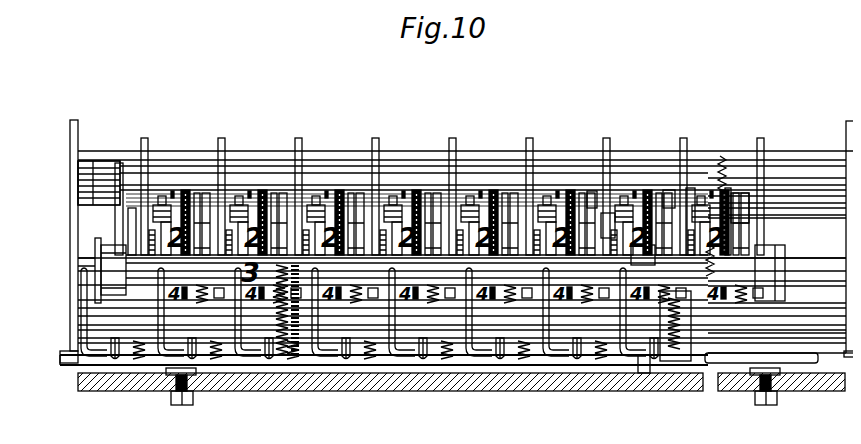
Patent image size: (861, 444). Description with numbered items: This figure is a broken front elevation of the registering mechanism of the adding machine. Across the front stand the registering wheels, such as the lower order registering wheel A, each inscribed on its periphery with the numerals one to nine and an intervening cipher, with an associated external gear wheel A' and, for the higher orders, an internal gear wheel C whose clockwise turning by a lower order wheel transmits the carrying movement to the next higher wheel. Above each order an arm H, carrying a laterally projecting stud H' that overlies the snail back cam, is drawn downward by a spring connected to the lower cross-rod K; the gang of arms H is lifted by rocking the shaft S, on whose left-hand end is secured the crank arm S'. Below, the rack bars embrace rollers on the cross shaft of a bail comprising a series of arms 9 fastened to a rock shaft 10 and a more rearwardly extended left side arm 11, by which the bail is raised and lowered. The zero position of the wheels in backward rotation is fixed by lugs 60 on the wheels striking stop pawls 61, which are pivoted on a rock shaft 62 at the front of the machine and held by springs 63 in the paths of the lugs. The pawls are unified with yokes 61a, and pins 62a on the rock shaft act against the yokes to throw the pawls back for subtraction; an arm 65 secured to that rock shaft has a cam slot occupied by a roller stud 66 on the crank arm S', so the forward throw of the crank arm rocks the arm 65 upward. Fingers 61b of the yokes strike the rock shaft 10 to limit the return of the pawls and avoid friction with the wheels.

The crank arm S' is at (147, 170).
The roller stud 66 is at (113, 185).
The lugs 60 is at (310, 200).
The stop pawls 61 is at (325, 205).
The arm H is at (584, 153).
The laterally projecting stud H' is at (624, 177).
The internal gear wheel C is at (657, 182).
The lower order registering wheel A is at (708, 180).
The external gear wheel A' is at (739, 181).
The shaft S is at (825, 223).
The left side arm 11 is at (88, 253).
The rock shaft 10 is at (798, 253).
The arms 9 is at (347, 257).
The fingers 61b is at (236, 268).
The rock shaft 62 is at (595, 320).
The yokes 61a is at (132, 350).
The pins 62a is at (187, 350).
The springs 63 is at (362, 343).
The arm 65 is at (120, 347).
The lower cross-rod K is at (793, 358).